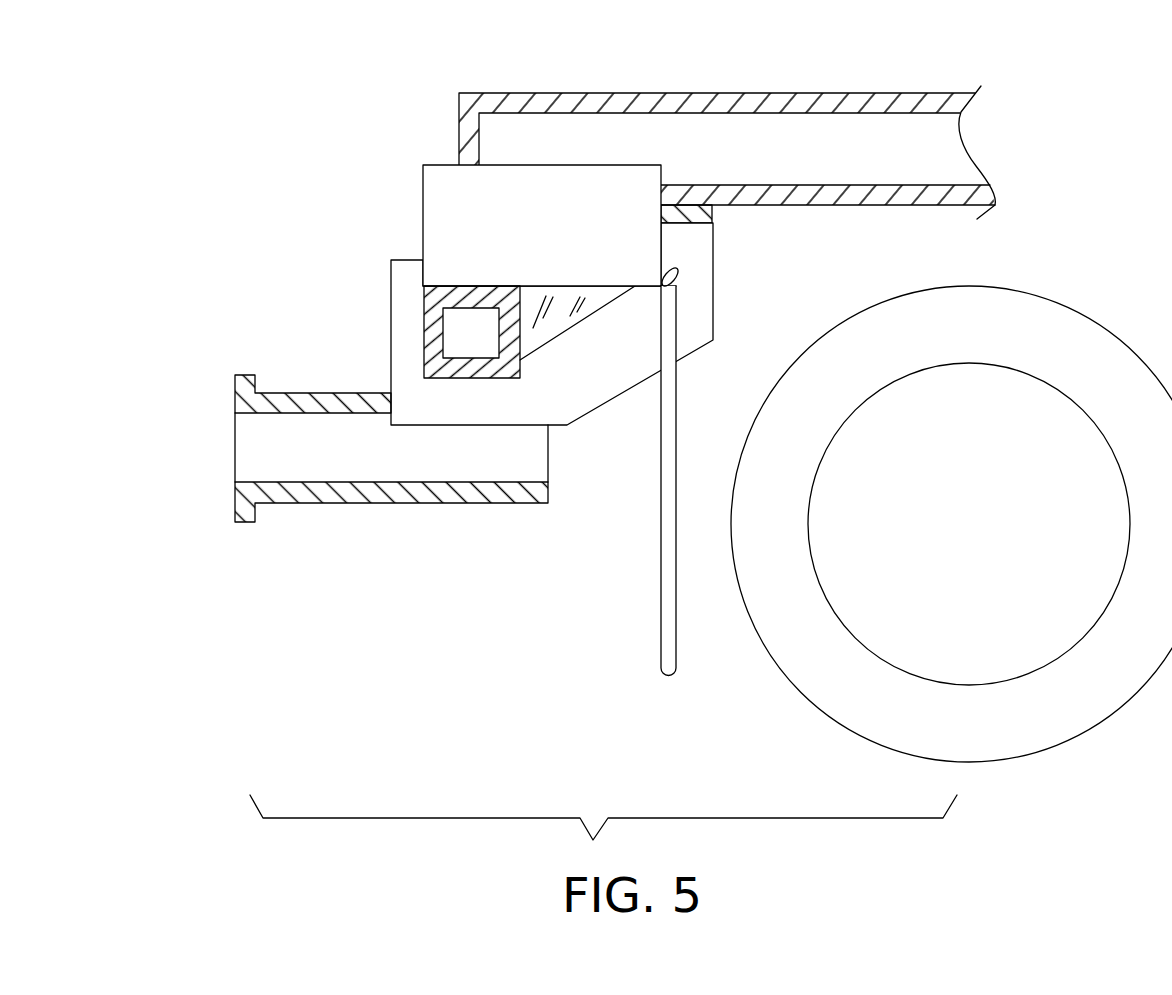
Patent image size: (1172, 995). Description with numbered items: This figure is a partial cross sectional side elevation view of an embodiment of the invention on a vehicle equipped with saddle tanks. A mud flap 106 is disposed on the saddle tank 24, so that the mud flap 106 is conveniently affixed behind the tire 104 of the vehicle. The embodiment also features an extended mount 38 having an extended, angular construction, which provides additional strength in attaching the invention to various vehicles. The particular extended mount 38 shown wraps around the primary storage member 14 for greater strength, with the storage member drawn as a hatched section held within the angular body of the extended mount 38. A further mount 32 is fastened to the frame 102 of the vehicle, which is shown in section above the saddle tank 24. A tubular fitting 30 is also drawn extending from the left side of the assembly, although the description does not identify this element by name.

The primary storage member 14 is at (424, 333).
The saddle tank 24 is at (423, 197).
The inlet tube 30 is at (235, 455).
The mount 32 is at (713, 213).
The extended mount 38 is at (713, 268).
The frame 102 is at (635, 93).
The tire 104 is at (1096, 320).
The mud flap 106 is at (661, 612).